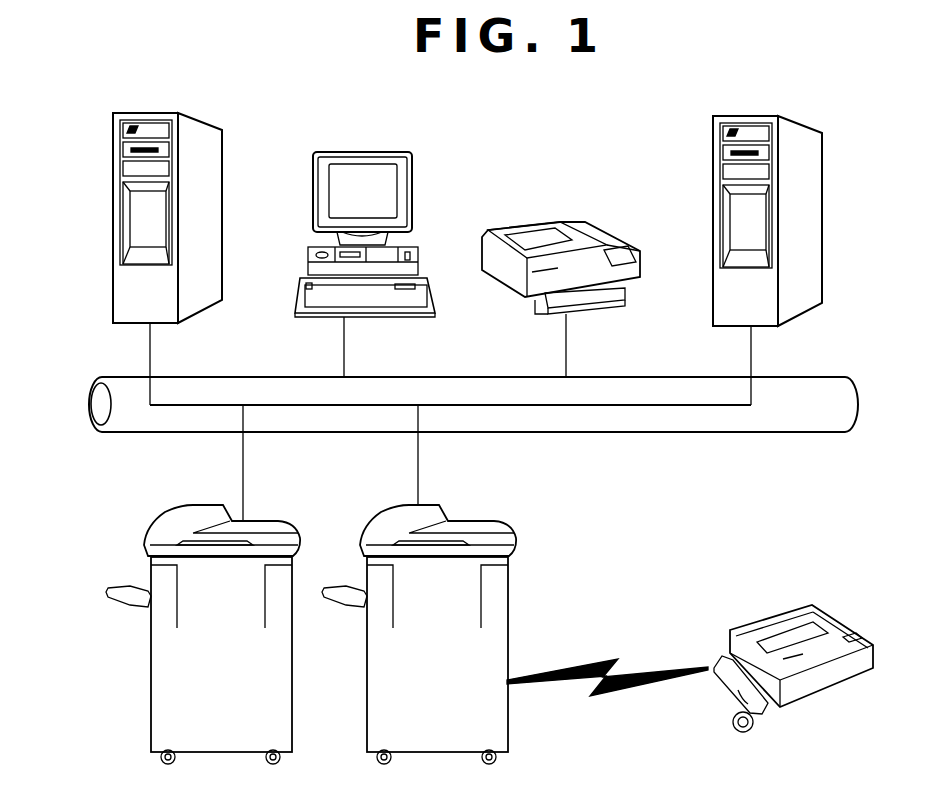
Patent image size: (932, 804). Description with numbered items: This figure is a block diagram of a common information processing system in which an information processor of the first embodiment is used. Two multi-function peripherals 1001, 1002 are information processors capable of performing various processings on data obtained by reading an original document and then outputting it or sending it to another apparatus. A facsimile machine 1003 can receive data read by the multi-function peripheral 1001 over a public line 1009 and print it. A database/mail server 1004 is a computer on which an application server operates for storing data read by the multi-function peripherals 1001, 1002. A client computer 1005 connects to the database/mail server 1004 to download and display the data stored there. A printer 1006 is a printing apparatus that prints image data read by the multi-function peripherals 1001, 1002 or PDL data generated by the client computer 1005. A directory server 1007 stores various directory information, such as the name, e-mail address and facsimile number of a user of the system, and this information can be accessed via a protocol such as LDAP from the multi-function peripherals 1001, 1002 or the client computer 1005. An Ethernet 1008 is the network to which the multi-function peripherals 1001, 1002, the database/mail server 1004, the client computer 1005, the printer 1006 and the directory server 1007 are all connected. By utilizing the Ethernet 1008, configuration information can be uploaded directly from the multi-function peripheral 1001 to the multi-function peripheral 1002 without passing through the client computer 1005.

The multi-function peripheral 1001 is at (407, 752).
The multi-function peripheral 1002 is at (199, 752).
The facsimile machine 1003 is at (826, 690).
The database/mail server 1004 is at (113, 197).
The client computer 1005 is at (331, 152).
The printer 1006 is at (541, 222).
The directory server 1007 is at (823, 211).
The Ethernet 1008 is at (680, 434).
The public line 1009 is at (617, 690).